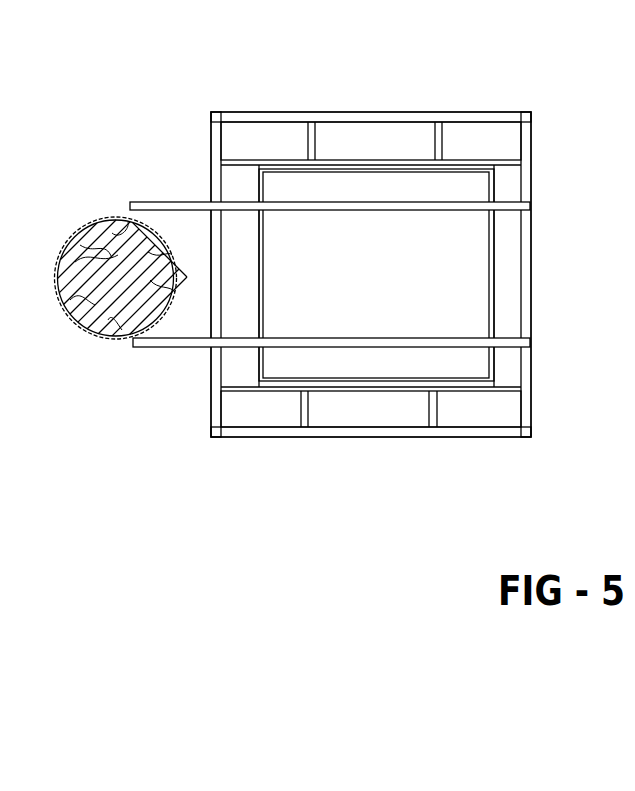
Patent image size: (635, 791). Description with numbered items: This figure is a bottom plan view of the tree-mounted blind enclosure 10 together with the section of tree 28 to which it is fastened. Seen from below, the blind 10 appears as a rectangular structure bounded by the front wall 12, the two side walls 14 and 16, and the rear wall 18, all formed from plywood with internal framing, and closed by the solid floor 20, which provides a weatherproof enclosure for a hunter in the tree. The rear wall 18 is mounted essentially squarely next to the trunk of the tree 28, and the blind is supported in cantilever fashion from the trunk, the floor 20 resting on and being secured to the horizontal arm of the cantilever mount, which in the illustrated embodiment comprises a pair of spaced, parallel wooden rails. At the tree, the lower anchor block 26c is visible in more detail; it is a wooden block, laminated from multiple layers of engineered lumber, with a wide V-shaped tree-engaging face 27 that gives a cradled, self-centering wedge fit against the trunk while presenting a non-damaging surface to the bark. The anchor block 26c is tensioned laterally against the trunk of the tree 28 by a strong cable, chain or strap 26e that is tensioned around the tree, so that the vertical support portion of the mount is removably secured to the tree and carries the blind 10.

The tree-mounted blind enclosure 10 is at (459, 81).
The front wall 12 is at (495, 247).
The side wall 14 is at (353, 112).
The side wall 16 is at (374, 438).
The rear wall 18 is at (208, 135).
The floor 20 is at (532, 173).
The lower anchor block 26c is at (196, 211).
The strap 26e is at (75, 321).
The V-shaped tree-engaging face 27 is at (150, 228).
The tree 28 is at (80, 222).